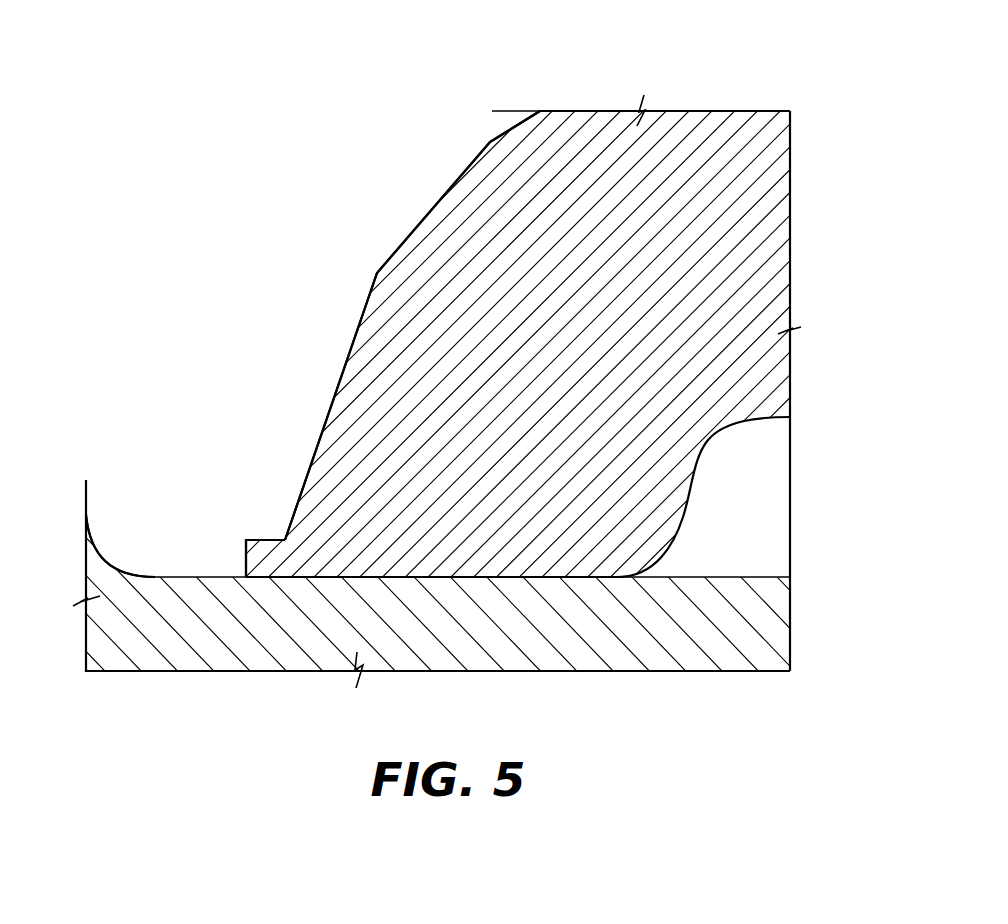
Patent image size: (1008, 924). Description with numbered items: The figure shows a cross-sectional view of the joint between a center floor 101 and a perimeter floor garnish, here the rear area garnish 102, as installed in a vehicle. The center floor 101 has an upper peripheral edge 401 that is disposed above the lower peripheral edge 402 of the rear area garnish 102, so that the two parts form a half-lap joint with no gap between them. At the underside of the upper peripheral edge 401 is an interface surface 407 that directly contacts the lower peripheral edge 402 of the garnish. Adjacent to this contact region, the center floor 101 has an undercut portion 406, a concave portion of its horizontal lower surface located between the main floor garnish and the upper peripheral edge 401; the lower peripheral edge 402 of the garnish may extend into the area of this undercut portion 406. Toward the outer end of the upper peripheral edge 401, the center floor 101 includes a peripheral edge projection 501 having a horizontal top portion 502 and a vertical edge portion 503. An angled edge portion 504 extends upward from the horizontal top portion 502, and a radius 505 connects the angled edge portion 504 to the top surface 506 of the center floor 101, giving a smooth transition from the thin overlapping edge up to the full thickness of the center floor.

The center floor 101 is at (845, 213).
The rear area garnish 102 is at (72, 585).
The upper peripheral edge 401 is at (404, 178).
The lower peripheral edge 402 is at (777, 610).
The undercut portion 406 is at (767, 453).
The interface surface 407 is at (472, 577).
The peripheral edge projection 501 is at (220, 514).
The horizontal top portion 502 is at (270, 540).
The vertical edge portion 503 is at (243, 572).
The angled edge portion 504 is at (347, 350).
The radius 505 is at (490, 145).
The top surface 506 is at (733, 111).